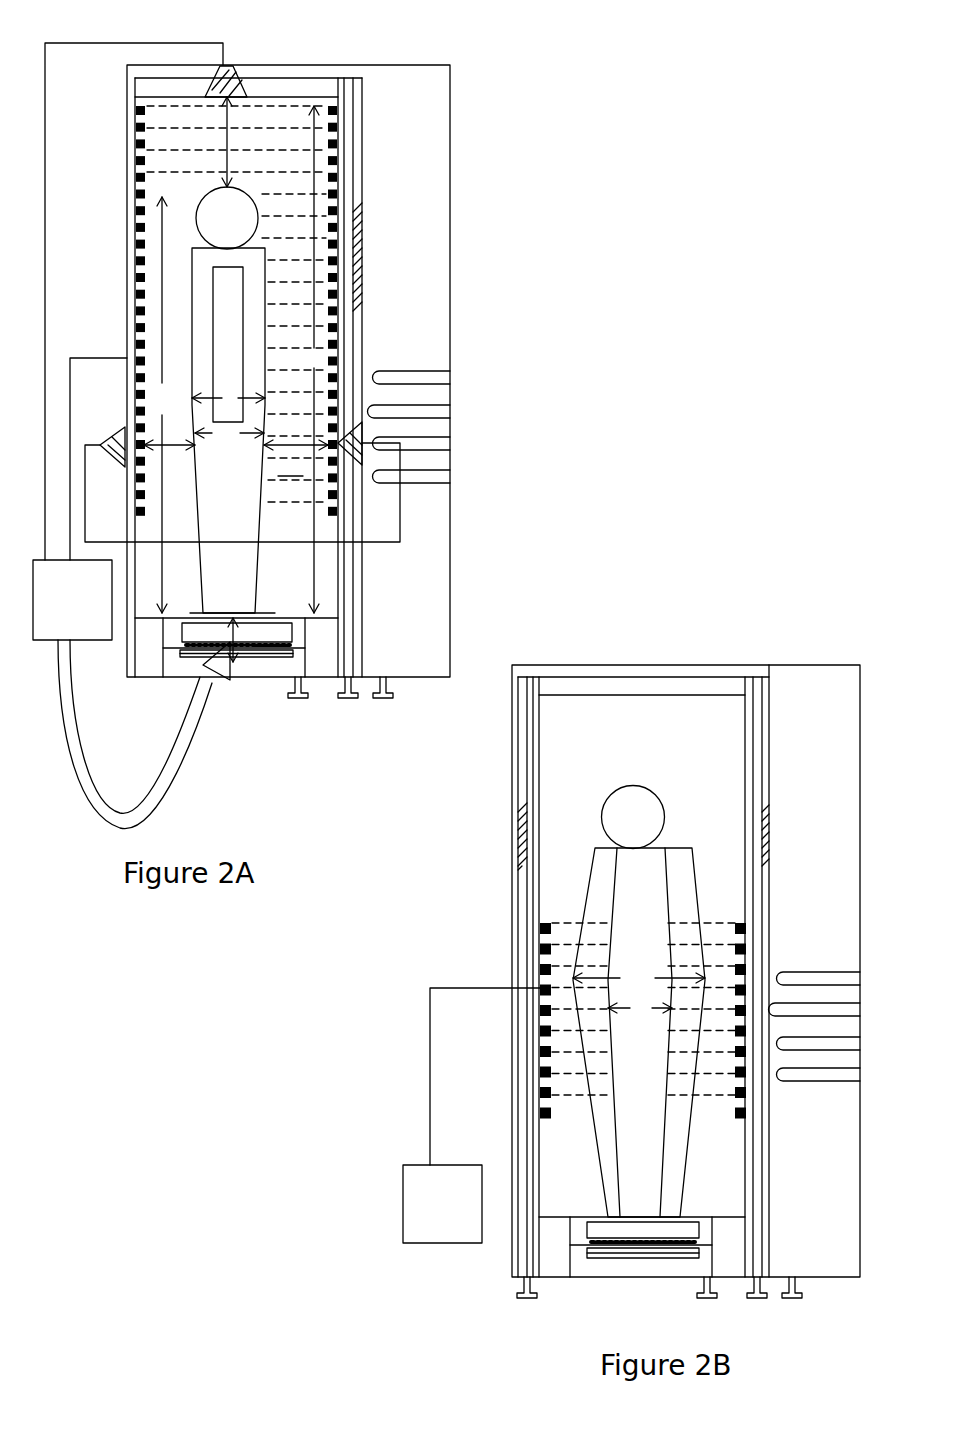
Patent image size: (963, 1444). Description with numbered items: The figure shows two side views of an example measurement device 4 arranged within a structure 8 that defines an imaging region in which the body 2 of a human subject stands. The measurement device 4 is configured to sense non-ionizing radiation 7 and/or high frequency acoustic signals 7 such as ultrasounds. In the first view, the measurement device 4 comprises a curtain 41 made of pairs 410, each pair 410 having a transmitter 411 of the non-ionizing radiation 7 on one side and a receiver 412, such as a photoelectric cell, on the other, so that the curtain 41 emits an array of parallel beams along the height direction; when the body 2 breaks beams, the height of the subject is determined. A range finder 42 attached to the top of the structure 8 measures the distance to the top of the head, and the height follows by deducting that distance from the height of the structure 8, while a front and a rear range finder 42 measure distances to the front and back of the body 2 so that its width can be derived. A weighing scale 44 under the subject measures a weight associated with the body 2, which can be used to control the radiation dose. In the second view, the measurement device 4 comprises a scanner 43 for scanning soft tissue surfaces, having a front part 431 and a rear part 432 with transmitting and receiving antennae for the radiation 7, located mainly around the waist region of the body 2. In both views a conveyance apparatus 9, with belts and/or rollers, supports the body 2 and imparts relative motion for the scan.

In FIG. 2A, the structure 8 is at (430, 128).
In FIG. 2B, the structure 8 is at (827, 698).
In FIG. 2A, the range finder 42 is at (223, 66).
In FIG. 2A, the receiver 412 is at (131, 192).
In FIG. 2A, the transmitter 411 is at (333, 193).
In FIG. 2A, the curtain 41 is at (132, 308).
In FIG. 2A, the pair 410 is at (343, 298).
In FIG. 2A, the non-ionizing radiation 7 is at (282, 200).
In FIG. 2B, the non-ionizing radiation 7 is at (576, 1073).
In FIG. 2A, the body 2 is at (230, 480).
In FIG. 2A, the conveyance apparatus 9 is at (285, 635).
In FIG. 2B, the conveyance apparatus 9 is at (605, 1230).
In FIG. 2A, the weighing scale 44 is at (250, 633).
In FIG. 2A, the measurement device 4 is at (70, 795).
In FIG. 2B, the measurement device 4 is at (408, 1250).
In FIG. 2B, the scanner 43 is at (430, 931).
In FIG. 2B, the part 431 is at (540, 968).
In FIG. 2B, the part 432 is at (746, 938).